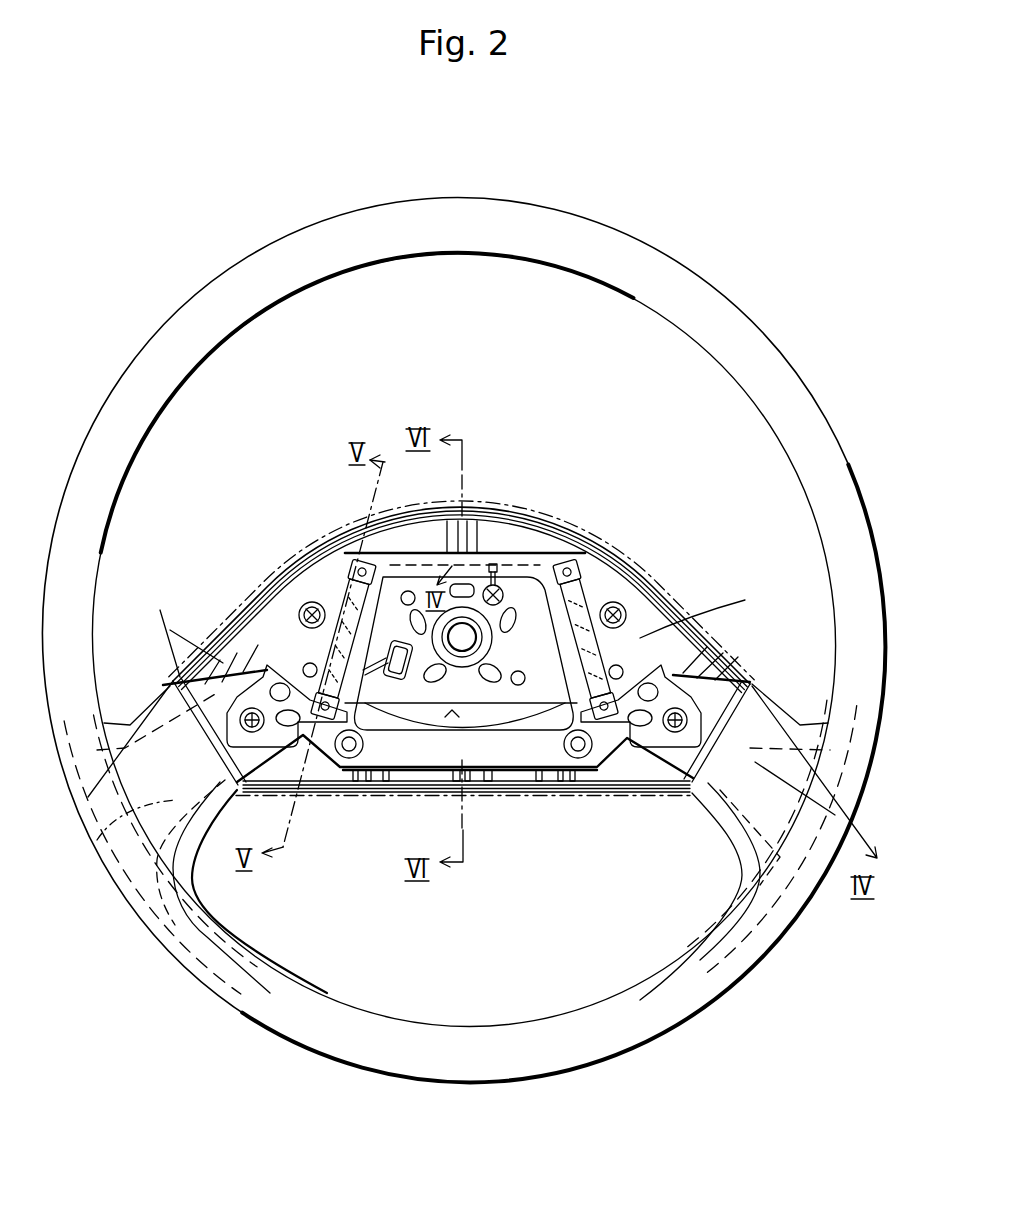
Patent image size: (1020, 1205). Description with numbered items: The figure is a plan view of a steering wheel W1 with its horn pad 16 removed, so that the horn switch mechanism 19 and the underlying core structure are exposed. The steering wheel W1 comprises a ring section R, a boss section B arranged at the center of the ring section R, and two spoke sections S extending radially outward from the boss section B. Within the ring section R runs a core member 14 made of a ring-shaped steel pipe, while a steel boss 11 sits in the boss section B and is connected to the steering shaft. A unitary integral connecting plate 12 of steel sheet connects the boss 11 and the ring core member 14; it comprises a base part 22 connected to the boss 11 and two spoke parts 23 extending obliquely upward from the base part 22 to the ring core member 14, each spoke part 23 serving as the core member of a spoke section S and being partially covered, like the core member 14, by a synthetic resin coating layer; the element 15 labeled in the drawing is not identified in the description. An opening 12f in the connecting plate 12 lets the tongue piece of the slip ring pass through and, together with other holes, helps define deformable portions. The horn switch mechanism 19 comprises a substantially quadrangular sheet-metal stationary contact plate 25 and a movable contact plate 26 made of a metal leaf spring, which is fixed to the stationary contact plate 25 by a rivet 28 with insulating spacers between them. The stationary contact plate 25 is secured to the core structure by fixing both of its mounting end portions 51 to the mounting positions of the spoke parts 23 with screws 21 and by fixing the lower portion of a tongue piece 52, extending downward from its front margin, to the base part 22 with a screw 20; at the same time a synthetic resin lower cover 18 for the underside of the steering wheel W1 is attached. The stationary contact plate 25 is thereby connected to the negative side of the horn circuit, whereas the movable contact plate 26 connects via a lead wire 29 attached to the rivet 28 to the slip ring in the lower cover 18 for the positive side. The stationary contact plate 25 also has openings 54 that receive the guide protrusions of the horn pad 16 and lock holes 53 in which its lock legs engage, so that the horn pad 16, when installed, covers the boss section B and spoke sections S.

The steering wheel W1 is at (703, 183).
The ring section R is at (481, 222).
The spoke section S is at (202, 878).
The boss section B is at (553, 820).
The boss 11 is at (467, 660).
The connecting plate 12 is at (527, 550).
The opening 12f is at (428, 782).
The core member 14 is at (135, 930).
The spoke core 15 is at (130, 723).
The horn pad 16 is at (280, 580).
The lower cover 18 is at (240, 625).
The horn switch mechanism 19 is at (333, 588).
The screw 20 is at (507, 550).
The screw 21 is at (180, 673).
The base part 22 is at (460, 542).
The spoke part 23 is at (88, 797).
The stationary contact plate 25 is at (560, 530).
The movable contact plate 26 is at (257, 635).
The rivet 28 is at (308, 600).
The lead wire 29 is at (392, 690).
The mounting end portion 51 is at (258, 735).
The tongue piece 52 is at (483, 550).
The lock hole 53 is at (300, 595).
The opening 54 is at (262, 633).